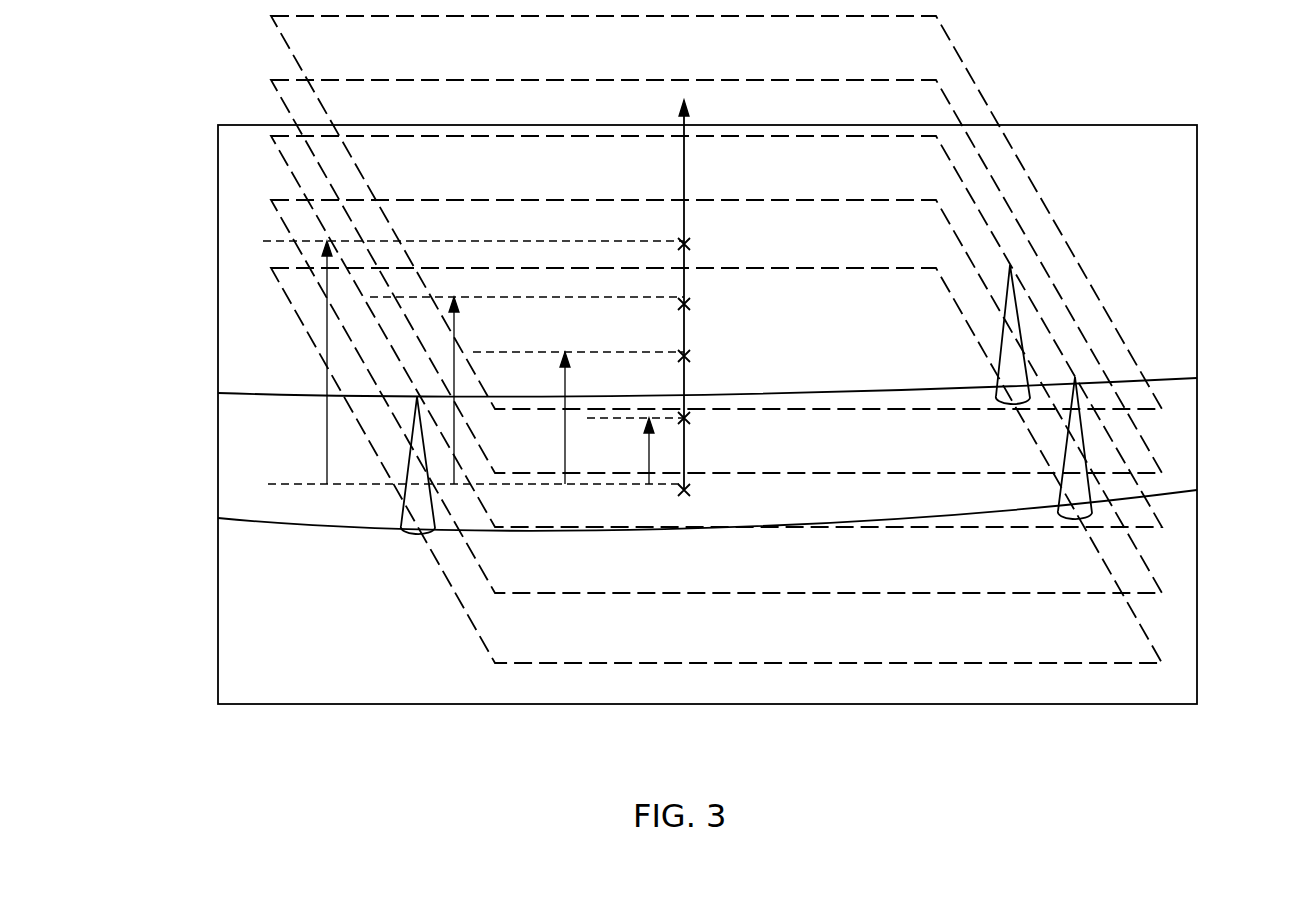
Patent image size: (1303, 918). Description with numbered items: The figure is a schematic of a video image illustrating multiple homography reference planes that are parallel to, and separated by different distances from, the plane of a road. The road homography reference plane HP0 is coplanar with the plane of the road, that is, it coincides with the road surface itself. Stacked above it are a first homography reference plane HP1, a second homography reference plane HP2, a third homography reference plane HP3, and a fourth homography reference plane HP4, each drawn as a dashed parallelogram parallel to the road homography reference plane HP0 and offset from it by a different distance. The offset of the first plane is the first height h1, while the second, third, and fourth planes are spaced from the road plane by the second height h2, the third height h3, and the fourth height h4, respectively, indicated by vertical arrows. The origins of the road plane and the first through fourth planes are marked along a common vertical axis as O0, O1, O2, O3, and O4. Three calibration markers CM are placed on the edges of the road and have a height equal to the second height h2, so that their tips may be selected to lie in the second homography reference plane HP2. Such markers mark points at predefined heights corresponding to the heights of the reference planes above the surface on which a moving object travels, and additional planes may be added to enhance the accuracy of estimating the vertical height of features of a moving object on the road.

The road homography reference plane HP0 is at (1162, 663).
The first homography reference plane HP1 is at (1162, 593).
The second homography reference plane HP2 is at (1162, 527).
The third homography reference plane HP3 is at (1162, 473).
The fourth homography reference plane HP4 is at (1162, 409).
The element road is at (210, 393).
The calibration marker CM is at (402, 527).
The first height h1 is at (635, 451).
The second height h2 is at (578, 418).
The third height h3 is at (527, 390).
The fourth height h4 is at (473, 362).
The origin of the road homography reference plane O0 is at (690, 490).
The origin of the first homography reference plane O1 is at (690, 418).
The origin of the second homography reference plane O2 is at (690, 356).
The origin of the third homography reference plane O3 is at (690, 304).
The origin of the fourth homography reference plane O4 is at (690, 244).